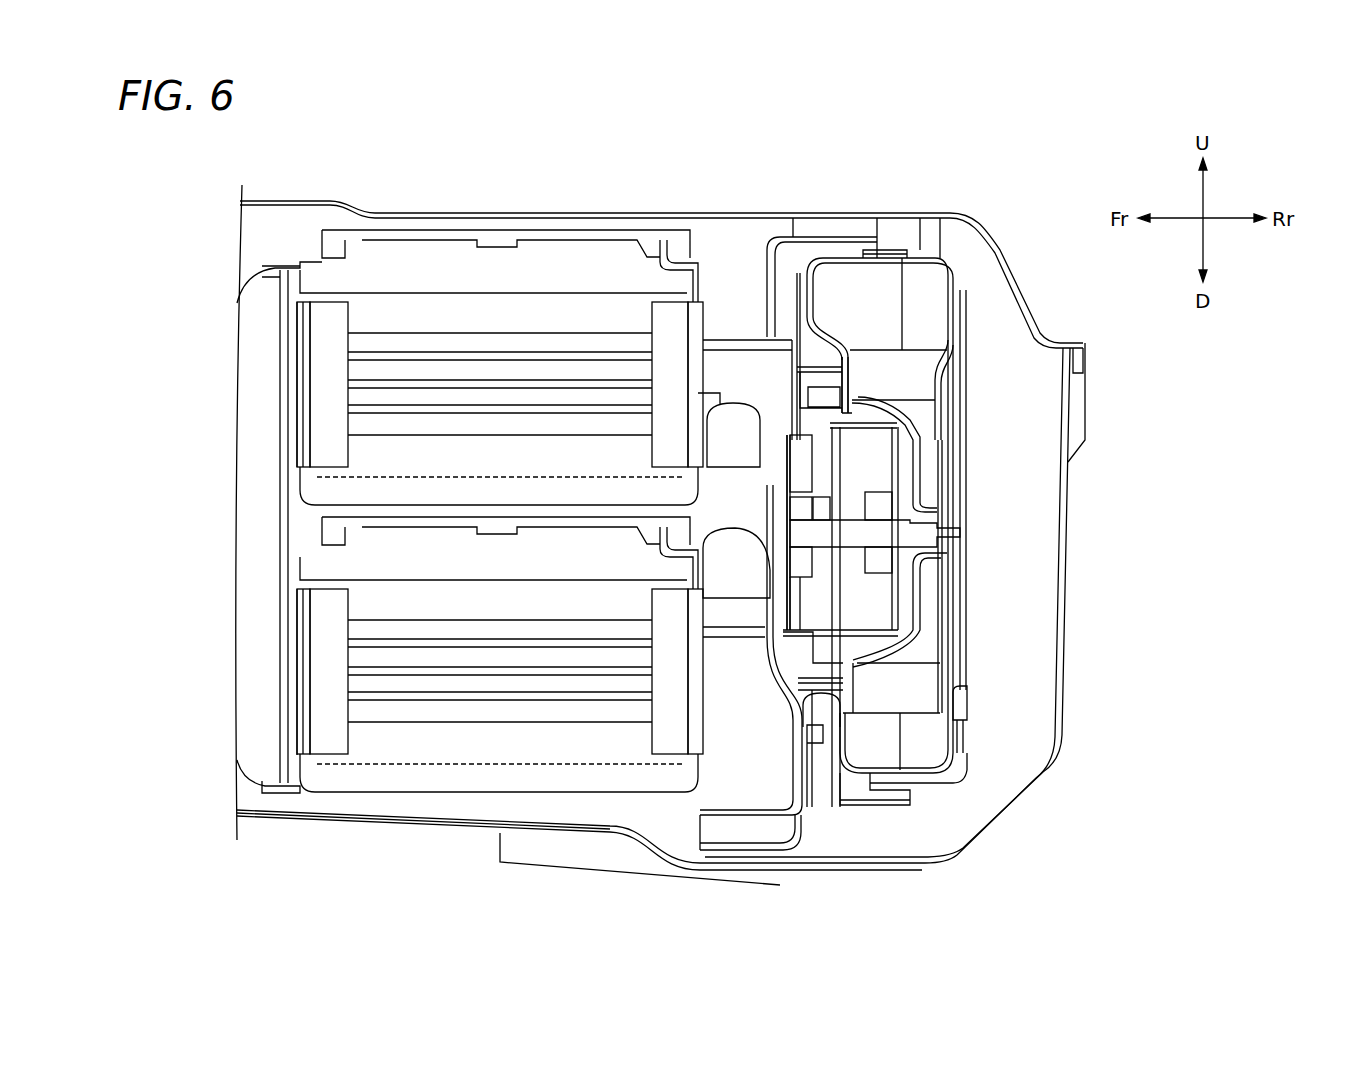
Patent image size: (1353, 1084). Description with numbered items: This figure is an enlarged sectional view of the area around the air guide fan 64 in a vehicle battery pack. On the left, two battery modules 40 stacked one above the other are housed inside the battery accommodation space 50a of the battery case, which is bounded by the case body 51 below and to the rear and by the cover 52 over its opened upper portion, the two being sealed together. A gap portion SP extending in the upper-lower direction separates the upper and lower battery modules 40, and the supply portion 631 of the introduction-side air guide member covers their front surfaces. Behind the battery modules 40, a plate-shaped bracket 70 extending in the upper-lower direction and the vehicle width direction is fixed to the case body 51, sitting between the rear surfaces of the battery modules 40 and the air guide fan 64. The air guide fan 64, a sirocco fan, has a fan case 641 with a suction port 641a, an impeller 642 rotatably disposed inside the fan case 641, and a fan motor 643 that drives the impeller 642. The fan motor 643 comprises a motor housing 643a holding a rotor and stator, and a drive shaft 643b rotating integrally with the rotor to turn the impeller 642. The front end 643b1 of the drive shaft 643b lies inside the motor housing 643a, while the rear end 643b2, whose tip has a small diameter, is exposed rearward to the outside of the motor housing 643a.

The battery module 40 is at (535, 335).
The gap portion SP is at (493, 520).
The battery accommodation space 50a is at (452, 806).
The case body 51 is at (1068, 695).
The cover 52 is at (1008, 258).
The supply portion 631 is at (250, 330).
The air guide fan 64 is at (930, 795).
The fan case 641 is at (965, 762).
The suction port 641a is at (960, 690).
The impeller 642 is at (920, 385).
The fan motor 643 is at (793, 422).
The motor housing 643a is at (800, 630).
The drive shaft 643b is at (872, 530).
The front end of the drive shaft 643b1 is at (798, 535).
The rear end of the drive shaft 643b2 is at (960, 533).
The bracket 70 is at (757, 605).